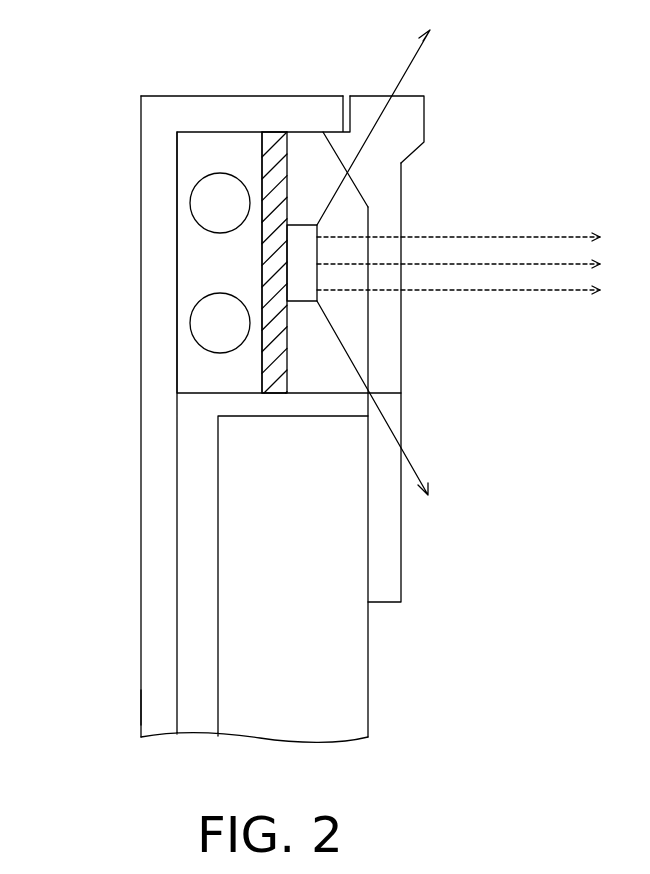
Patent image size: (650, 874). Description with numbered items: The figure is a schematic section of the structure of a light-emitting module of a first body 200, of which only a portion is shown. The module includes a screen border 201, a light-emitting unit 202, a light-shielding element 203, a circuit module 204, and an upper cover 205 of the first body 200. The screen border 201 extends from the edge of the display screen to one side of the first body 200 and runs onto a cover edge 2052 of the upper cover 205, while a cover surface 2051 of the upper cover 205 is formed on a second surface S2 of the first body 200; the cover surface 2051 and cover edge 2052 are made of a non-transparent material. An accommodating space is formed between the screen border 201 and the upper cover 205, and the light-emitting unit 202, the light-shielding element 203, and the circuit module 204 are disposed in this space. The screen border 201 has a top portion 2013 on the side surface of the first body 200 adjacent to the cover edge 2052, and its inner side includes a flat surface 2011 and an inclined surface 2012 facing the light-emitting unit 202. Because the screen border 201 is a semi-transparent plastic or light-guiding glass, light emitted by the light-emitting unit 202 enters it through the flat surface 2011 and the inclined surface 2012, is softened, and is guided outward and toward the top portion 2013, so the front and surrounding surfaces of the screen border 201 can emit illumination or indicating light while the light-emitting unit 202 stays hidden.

The first body 200 is at (487, 770).
The screen border 201 is at (390, 220).
The flat surface 2011 is at (378, 348).
The inclined surface 2012 is at (369, 189).
The top portion 2013 is at (362, 108).
The light-emitting unit 202 is at (303, 242).
The light-shielding element 203 is at (274, 148).
The circuit module 204 is at (184, 140).
The upper cover 205 is at (160, 153).
The cover surface 2051 is at (133, 302).
The cover edge 2052 is at (207, 85).
The second surface S2 is at (133, 712).